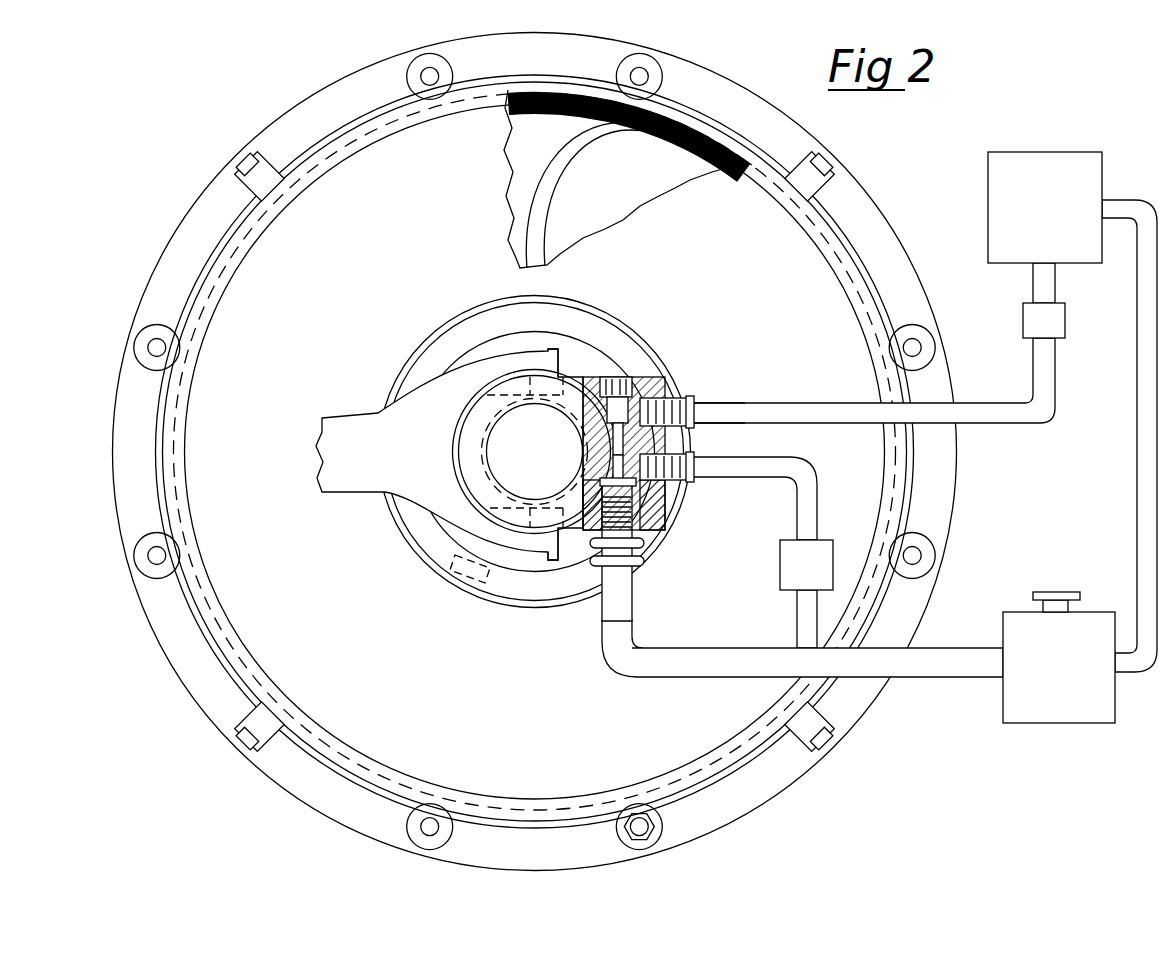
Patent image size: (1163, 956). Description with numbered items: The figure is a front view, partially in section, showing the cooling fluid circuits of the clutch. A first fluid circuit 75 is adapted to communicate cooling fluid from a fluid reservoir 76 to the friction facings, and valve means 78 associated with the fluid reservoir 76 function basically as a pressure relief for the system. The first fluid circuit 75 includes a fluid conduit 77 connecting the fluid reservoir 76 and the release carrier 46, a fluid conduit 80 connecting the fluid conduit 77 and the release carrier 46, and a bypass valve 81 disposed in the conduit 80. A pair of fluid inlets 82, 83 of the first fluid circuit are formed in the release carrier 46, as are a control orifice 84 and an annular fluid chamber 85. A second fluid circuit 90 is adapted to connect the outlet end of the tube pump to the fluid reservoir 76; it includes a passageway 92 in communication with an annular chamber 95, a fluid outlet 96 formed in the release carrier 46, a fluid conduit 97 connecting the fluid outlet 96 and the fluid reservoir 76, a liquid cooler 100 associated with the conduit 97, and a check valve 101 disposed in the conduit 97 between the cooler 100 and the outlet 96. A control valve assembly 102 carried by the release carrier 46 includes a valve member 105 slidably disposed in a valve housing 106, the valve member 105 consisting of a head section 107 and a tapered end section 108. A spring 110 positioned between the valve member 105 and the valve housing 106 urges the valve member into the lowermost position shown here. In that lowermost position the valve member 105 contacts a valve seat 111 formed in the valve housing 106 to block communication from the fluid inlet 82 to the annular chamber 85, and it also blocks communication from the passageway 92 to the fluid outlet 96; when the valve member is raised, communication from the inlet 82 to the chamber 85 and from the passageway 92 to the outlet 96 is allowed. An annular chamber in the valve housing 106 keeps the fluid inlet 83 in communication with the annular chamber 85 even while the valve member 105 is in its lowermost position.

The release carrier 46 is at (590, 377).
The first fluid circuit 75 is at (694, 690).
The fluid reservoir 76 is at (1003, 708).
The fluid conduit 77 is at (752, 654).
The valve means 78 is at (1070, 592).
The fluid conduit 80 is at (818, 494).
The bypass valve 81 is at (780, 554).
The fluid inlet 82 is at (650, 540).
The fluid inlet 83 is at (692, 488).
The control orifice 84 is at (600, 485).
The annular fluid chamber 85 is at (528, 412).
The second fluid circuit 90 is at (752, 390).
The passageway 92 is at (690, 436).
The annular chamber 95 is at (586, 441).
The fluid outlet 96 is at (652, 398).
The fluid conduit 97 is at (830, 402).
The liquid cooler 100 is at (1062, 152).
The check valve 101 is at (1023, 318).
The control valve assembly 102 is at (684, 358).
The valve member 105 is at (583, 420).
The valve housing 106 is at (676, 510).
The head section 107 is at (588, 458).
The tapered end section 108 is at (592, 472).
The spring 110 is at (615, 378).
The valve seat 111 is at (557, 548).